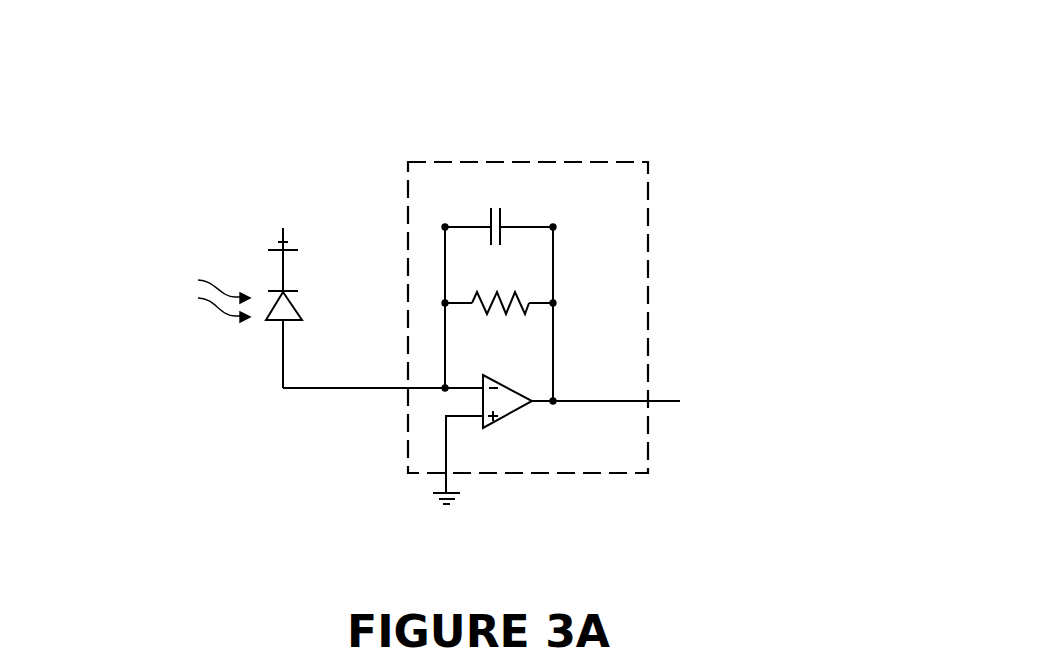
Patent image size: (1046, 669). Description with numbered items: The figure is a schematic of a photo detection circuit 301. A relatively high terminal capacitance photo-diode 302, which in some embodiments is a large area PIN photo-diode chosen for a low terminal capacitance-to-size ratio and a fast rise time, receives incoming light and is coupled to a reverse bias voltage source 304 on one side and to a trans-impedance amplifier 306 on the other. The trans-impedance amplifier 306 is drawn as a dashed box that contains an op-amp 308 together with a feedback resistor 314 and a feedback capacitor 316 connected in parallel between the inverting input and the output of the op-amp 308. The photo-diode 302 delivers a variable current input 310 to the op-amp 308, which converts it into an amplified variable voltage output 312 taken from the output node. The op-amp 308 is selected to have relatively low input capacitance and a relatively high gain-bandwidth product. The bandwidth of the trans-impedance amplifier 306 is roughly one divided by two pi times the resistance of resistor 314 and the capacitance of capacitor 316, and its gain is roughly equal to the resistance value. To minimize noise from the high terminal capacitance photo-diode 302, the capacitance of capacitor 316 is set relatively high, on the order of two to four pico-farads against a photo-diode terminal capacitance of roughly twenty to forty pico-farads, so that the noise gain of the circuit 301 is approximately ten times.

The circuit 301 is at (767, 76).
The photo-diode 302 is at (302, 321).
The reverse bias voltage source 304 is at (296, 252).
The trans-impedance amplifier 306 is at (577, 474).
The op-amp 308 is at (487, 425).
The variable current input 310 is at (378, 389).
The amplified variable voltage output 312 is at (679, 400).
The resistor 314 is at (487, 310).
The capacitor 316 is at (500, 212).